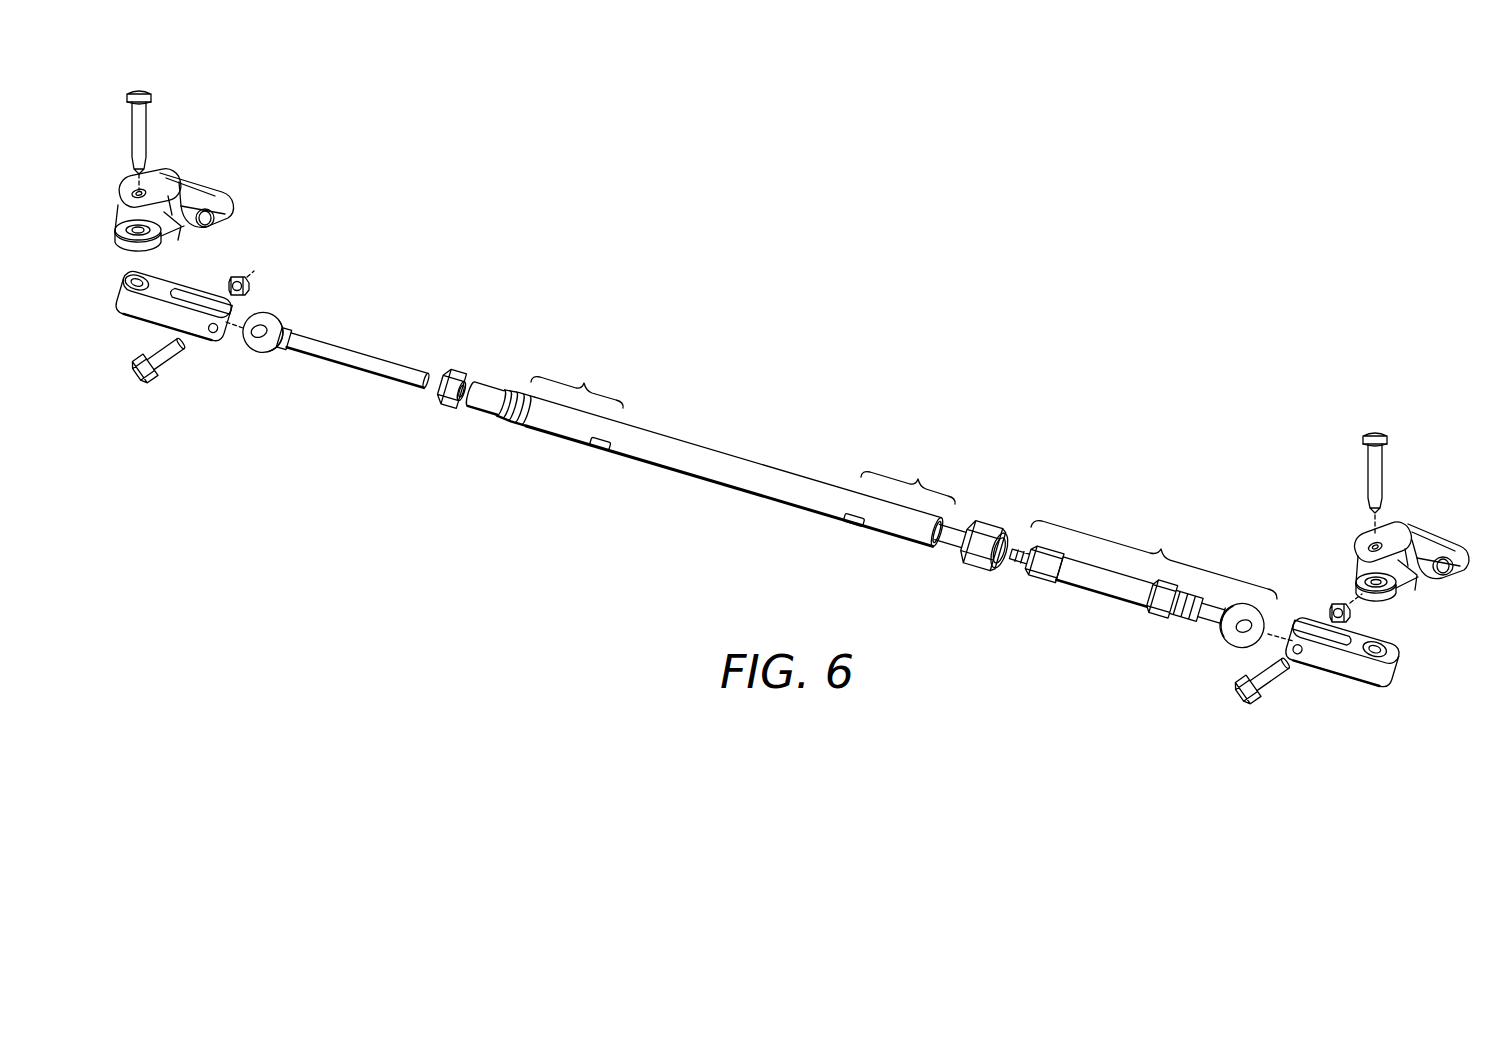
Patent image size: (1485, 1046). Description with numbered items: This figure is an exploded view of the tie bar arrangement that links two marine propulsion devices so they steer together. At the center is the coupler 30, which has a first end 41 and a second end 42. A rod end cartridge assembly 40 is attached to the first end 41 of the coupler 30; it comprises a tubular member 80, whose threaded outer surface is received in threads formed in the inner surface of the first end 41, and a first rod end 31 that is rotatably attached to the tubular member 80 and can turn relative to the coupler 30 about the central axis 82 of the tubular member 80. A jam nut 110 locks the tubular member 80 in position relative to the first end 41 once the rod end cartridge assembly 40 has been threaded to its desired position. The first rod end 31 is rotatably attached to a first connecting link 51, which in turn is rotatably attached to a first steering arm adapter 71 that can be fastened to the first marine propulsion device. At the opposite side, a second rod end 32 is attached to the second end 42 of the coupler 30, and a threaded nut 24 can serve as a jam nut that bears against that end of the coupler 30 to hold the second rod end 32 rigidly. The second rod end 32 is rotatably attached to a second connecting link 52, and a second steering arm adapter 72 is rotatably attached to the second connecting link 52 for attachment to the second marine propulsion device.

The second steering arm adapter 72 is at (207, 197).
The second connecting link 52 is at (148, 313).
The second rod end 32 is at (300, 338).
The threaded nut 24 is at (451, 372).
The coupler 30 is at (733, 463).
The second end of the coupler 42 is at (577, 376).
The first end of the coupler 41 is at (908, 474).
The jam nut 110 is at (968, 562).
The central axis of the tubular member 82 is at (1010, 550).
The rod end cartridge assembly 40 is at (1045, 612).
The tubular member 80 is at (1110, 590).
The first rod end 31 is at (1201, 618).
The first connecting link 51 is at (1332, 665).
The first steering arm adapter 71 is at (1365, 535).